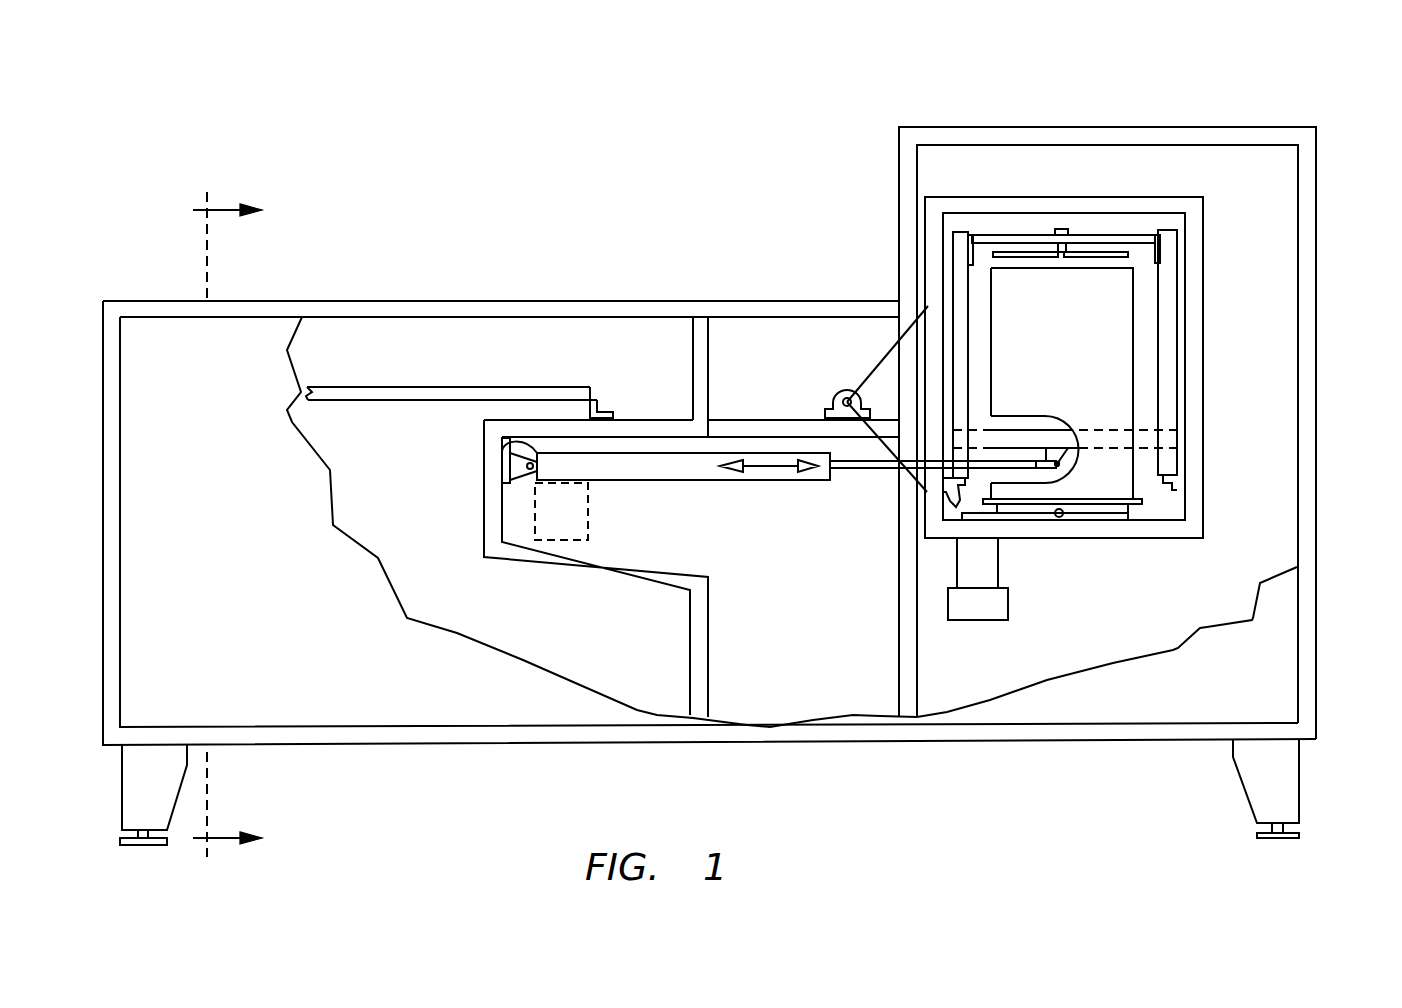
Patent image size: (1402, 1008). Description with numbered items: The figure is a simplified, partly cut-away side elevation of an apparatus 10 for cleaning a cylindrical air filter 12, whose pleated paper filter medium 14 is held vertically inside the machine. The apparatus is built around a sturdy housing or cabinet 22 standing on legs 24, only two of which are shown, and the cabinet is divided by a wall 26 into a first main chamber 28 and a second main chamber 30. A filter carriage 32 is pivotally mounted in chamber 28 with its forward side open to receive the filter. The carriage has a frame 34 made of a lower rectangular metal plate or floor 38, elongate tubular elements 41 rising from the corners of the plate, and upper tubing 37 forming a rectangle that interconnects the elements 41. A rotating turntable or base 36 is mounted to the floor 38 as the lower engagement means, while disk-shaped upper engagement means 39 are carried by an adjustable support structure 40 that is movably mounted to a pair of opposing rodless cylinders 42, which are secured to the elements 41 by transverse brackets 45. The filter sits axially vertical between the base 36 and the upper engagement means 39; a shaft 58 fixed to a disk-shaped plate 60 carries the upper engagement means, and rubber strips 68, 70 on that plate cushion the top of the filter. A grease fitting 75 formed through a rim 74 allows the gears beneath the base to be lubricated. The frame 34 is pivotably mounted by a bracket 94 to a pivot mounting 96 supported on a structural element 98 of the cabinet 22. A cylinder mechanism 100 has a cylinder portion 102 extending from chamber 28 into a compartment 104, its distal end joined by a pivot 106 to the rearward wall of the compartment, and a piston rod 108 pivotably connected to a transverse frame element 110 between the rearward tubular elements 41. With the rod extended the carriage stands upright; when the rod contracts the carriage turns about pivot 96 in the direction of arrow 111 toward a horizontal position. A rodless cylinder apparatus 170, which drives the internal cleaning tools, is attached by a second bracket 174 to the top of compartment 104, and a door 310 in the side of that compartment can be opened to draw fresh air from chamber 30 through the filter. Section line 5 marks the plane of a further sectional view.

The section line 5- 5 is at (227, 524).
The apparatus 10 is at (1333, 325).
The air filter 12 is at (1103, 550).
The filter medium 14 is at (1113, 365).
The cabinet 22 is at (603, 300).
The legs 24 is at (121, 793).
The wall 26 is at (728, 317).
The first main chamber 28 is at (868, 328).
The second main chamber 30 is at (353, 327).
The filter carriage 32 is at (1036, 197).
The frame 34 is at (1205, 263).
The rotating turntable or base 36 is at (1137, 513).
The upper tubing 37 is at (1145, 235).
The lower rectangular metal plate 38 is at (1108, 527).
The upper engagement means 39 is at (1087, 252).
The adjustable support structure 40 is at (1152, 232).
The elongate tubular elements 41 is at (935, 282).
The rodless cylinders 42 is at (957, 255).
The brackets 45 is at (1170, 497).
The shaft 58 is at (1062, 229).
The disk-shaped plate 60 is at (1039, 232).
The rubber strip 68 is at (1030, 258).
The rubber strip 70 is at (1104, 258).
The rim 74 is at (1086, 513).
The grease fitting 75 is at (1053, 517).
The bracket 94 is at (876, 383).
The pivot mounting 96 is at (843, 392).
The structural element 98 is at (770, 418).
The cylinder mechanism 100 is at (731, 568).
The cylinder portion 102 is at (660, 480).
The compartment 104 is at (484, 510).
The pivot 106 is at (503, 450).
The piston rod 108 is at (949, 499).
The transverse frame element 110 is at (1003, 430).
The arrow 111 is at (1180, 603).
The rodless cylinder apparatus 170 is at (423, 395).
The second bracket 174 is at (598, 400).
The door 310 is at (535, 525).